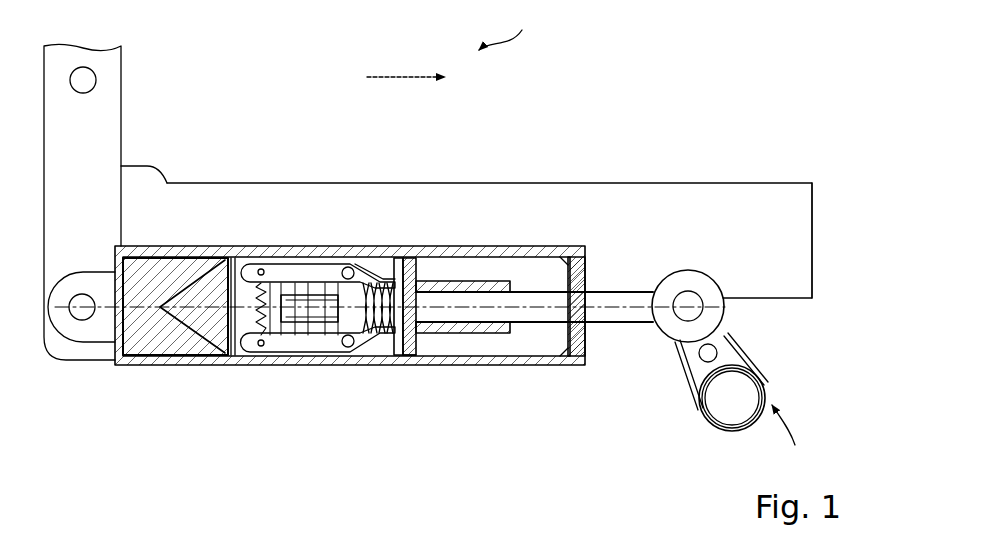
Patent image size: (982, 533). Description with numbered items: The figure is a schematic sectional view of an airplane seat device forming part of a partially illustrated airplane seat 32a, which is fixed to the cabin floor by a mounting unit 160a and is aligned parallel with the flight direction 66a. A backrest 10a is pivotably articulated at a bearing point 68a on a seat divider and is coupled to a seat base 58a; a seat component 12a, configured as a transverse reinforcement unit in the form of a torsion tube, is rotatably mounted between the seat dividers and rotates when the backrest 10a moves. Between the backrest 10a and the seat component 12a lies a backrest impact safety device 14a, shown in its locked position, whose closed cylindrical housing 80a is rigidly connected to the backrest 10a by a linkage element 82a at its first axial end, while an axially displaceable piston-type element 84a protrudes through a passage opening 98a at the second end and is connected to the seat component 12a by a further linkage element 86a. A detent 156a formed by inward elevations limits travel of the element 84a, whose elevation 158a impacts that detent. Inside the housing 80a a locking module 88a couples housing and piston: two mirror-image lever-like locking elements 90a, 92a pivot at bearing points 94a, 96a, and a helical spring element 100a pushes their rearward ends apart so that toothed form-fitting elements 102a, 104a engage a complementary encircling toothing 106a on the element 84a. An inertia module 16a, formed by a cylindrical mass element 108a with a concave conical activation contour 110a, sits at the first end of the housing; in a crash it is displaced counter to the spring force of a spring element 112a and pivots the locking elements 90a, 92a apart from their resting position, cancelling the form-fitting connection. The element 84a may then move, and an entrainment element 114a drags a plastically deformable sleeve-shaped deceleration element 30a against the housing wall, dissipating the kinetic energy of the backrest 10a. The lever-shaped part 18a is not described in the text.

The backrest 10a is at (97, 100).
The seat component 12a is at (733, 431).
The backrest impact safety device 14a is at (599, 240).
The inertia module 16a is at (411, 273).
The lever 18a is at (700, 368).
The deceleration element 30a is at (497, 247).
The airplane seat 32a is at (525, 26).
The seat base 58a is at (768, 205).
The flight direction 66a is at (413, 74).
The bearing point 68a is at (80, 78).
The housing 80a is at (350, 281).
The linkage element 82a is at (62, 332).
The element 84a is at (623, 312).
The linkage element 86a is at (704, 306).
The locking module 88a is at (374, 236).
The locking element 90a is at (283, 266).
The locking element 92a is at (322, 350).
The bearing point 94a is at (355, 262).
The bearing point 96a is at (352, 348).
The end cap 98a is at (587, 277).
The spring element 100a is at (256, 346).
The form-fitting element 102a is at (393, 278).
The form-fitting element 104a is at (374, 343).
The form-fitting element 106a is at (440, 340).
The mass element 108a is at (148, 334).
The activation contour 110a is at (208, 292).
The spring element 112a is at (312, 350).
The entrainment element 114a is at (417, 347).
The detent 156a is at (380, 266).
The elevation 158a is at (406, 282).
The mounting unit 160a is at (810, 438).